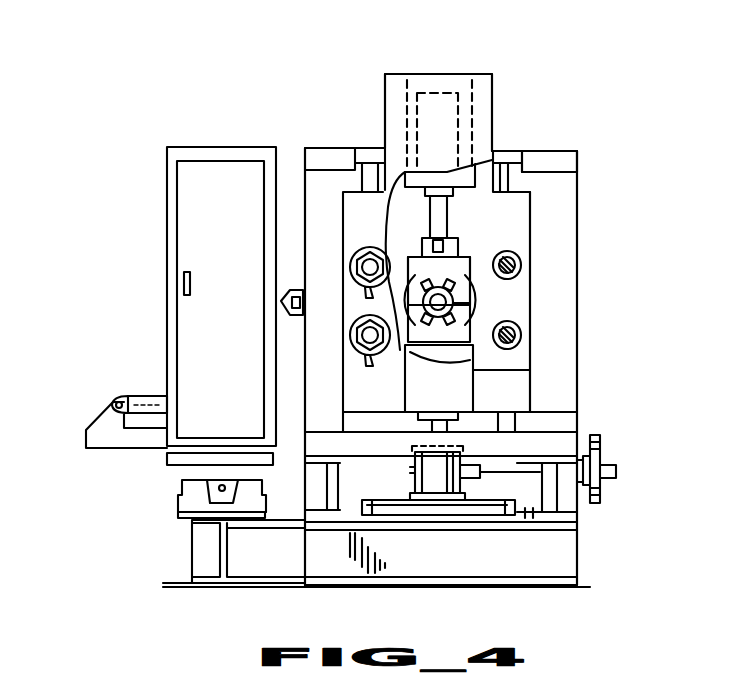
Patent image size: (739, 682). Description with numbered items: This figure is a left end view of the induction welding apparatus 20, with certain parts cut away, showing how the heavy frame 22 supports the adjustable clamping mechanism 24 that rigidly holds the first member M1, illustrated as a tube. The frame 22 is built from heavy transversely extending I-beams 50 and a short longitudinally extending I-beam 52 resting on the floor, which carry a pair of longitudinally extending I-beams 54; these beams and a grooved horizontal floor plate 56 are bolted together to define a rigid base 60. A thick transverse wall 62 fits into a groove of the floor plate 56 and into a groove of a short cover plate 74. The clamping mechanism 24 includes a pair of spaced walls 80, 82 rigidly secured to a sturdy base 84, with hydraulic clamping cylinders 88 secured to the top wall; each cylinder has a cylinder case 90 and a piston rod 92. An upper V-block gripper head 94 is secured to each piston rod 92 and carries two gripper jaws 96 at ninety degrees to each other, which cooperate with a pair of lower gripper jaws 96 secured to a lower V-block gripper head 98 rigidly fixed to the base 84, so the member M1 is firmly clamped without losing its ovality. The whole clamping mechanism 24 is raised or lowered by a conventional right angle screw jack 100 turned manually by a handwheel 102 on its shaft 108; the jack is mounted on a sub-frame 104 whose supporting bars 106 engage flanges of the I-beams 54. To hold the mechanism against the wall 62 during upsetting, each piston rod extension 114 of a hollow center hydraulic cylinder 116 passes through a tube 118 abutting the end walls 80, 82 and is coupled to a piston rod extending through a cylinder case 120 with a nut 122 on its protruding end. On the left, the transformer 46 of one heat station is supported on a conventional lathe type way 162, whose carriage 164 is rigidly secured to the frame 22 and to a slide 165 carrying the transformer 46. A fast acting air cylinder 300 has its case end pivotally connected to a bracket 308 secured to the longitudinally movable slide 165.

The induction welding apparatus 20 is at (602, 108).
The frame 22 is at (578, 566).
The clamping mechanism 24 is at (536, 192).
The transformer 46 is at (237, 148).
The transversely extending I-beams 50 is at (423, 568).
The longitudinally extending I-beam 52 is at (205, 542).
The longitudinally extending I-beams 54 is at (324, 489).
The floor plate 56 is at (562, 446).
The base 60 is at (190, 574).
The transverse wall 62 is at (580, 404).
The cover plate 74 is at (506, 150).
The spaced wall 80 is at (562, 416).
The spaced wall 82 is at (532, 218).
The base 84 is at (480, 374).
The hydraulic clamping cylinders 88 is at (432, 92).
The cylinder case 90 is at (480, 84).
The piston rod 92 is at (394, 212).
The upper V-block gripper head 94 is at (472, 296).
The gripper jaws 96 is at (430, 272).
The lower V-block gripper head 98 is at (430, 344).
The right angle screw jack 100 is at (415, 468).
The handwheel 102 is at (606, 484).
The sub-frame 104 is at (440, 513).
The supporting bars 106 is at (353, 508).
The shaft 108 is at (497, 476).
The piston rod extension 114 is at (356, 268).
The hollow center hydraulic cylinder 116 is at (288, 290).
The tube 118 is at (514, 260).
The cylinder case 120 is at (352, 261).
The nut 122 is at (352, 250).
The lathe type way 162 is at (188, 493).
The carriage 164 is at (188, 506).
The slide 165 is at (182, 480).
The air cylinder 300 is at (147, 400).
The bracket 308 is at (92, 440).
The first workpiece or member M1 is at (470, 304).